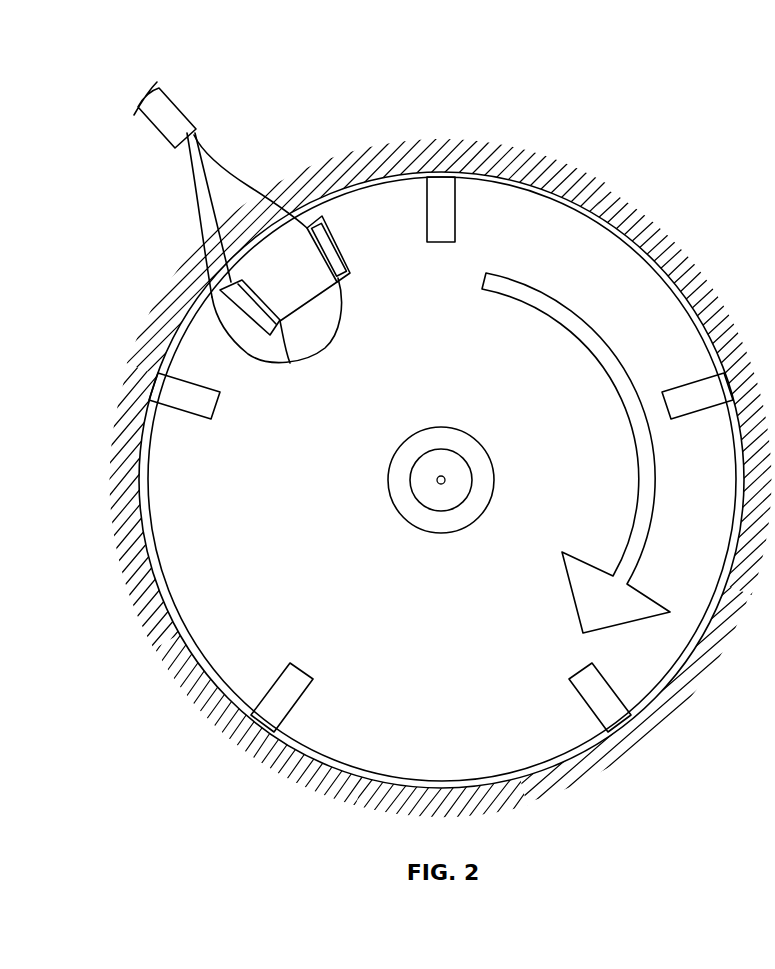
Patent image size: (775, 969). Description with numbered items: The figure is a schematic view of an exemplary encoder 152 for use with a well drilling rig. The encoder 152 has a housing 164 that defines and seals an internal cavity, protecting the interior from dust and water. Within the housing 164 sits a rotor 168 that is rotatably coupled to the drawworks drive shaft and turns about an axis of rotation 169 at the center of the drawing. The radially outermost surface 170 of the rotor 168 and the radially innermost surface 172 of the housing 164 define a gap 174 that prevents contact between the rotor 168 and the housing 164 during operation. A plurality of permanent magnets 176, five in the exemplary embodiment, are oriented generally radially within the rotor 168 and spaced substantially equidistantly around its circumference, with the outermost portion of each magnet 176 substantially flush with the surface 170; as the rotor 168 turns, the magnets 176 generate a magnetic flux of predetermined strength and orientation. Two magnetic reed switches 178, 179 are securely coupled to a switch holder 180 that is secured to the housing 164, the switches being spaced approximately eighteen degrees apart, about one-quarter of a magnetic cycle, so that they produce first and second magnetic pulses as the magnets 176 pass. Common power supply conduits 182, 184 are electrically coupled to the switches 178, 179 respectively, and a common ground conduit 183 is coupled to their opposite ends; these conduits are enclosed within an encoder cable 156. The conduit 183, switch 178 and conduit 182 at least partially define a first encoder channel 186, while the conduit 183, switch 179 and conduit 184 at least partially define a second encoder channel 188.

The encoder 152 is at (223, 197).
The encoder cable 156 is at (168, 104).
The housing 164 is at (580, 178).
The rotor 168 is at (170, 462).
The axis of rotation 169 is at (447, 480).
The radially outermost surface 170 is at (143, 532).
The radially innermost surface 172 is at (157, 590).
The gap 174 is at (147, 562).
The permanent magnets 176 is at (445, 213).
The magnetic reed switch 178 is at (246, 300).
The magnetic reed switch 179 is at (336, 263).
The switch holder 180 is at (330, 230).
The common power supply conduit 182 is at (229, 248).
The common ground conduit 183 is at (193, 170).
The common power supply conduit 184 is at (213, 162).
The first encoder channel 186 is at (165, 205).
The second encoder channel 188 is at (270, 112).